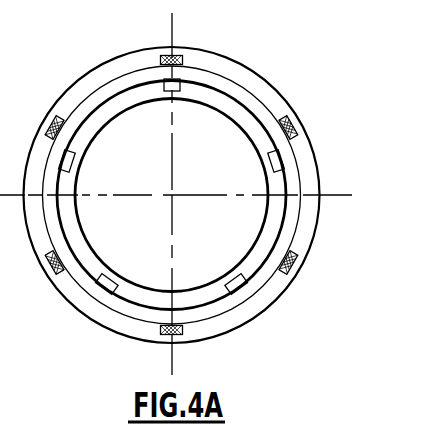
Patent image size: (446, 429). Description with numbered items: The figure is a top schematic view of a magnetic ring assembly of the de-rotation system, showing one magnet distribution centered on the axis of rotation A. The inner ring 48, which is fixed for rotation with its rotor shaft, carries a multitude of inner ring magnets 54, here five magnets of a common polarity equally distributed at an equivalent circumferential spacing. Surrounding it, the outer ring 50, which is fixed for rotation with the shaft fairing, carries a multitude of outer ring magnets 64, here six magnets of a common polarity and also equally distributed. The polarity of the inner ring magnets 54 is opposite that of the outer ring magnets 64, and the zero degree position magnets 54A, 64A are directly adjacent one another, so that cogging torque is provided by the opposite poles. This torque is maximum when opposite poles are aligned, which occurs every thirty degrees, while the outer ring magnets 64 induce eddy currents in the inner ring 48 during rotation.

The inner ring 48 is at (240, 118).
The outer ring 50 is at (283, 93).
The inner ring magnets 54 is at (267, 165).
The zero degree position inner ring magnet 54A is at (166, 91).
The outer ring magnets 64 is at (295, 126).
The zero degree position outer ring magnet 64A is at (161, 57).
The axis of rotation A is at (174, 197).